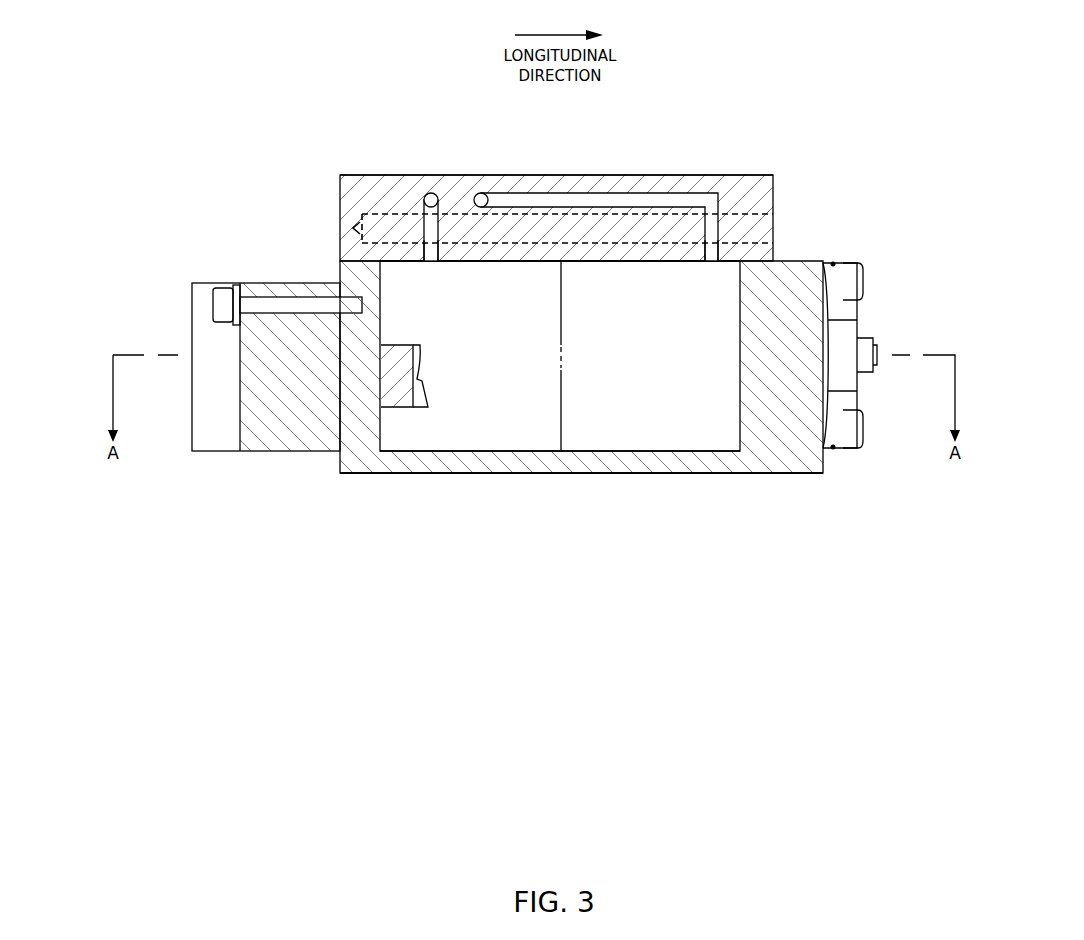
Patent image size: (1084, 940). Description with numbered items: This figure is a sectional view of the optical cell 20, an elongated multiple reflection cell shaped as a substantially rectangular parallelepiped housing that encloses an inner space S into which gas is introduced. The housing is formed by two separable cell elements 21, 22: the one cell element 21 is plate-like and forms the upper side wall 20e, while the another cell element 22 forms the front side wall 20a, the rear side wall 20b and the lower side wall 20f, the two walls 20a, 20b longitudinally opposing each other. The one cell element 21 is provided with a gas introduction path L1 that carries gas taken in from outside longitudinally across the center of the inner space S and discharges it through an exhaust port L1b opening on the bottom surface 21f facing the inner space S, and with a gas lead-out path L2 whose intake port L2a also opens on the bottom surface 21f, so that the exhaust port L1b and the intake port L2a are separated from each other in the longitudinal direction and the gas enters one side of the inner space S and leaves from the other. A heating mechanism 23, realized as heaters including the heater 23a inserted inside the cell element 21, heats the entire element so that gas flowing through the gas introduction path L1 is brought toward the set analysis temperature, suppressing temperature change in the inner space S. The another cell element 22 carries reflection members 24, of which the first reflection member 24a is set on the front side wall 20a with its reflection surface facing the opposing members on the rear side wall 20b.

The optical cell 20 is at (862, 102).
The front side wall 20a is at (340, 462).
The rear side wall 20b is at (812, 454).
The upper side wall 20e is at (362, 178).
The lower side wall 20f is at (637, 462).
The one cell element 21 is at (712, 175).
The bottom surface 21f is at (591, 272).
The another cell element 22 is at (560, 476).
The heating mechanism 23 is at (606, 203).
The heater 23a is at (763, 204).
The reflection members 24 is at (419, 436).
The first reflection member 24a is at (406, 420).
The gas introduction path L1 is at (587, 192).
The exhaust port L1b is at (706, 262).
The gas lead-out path L2 is at (428, 192).
The intake port L2a is at (436, 262).
The inner space S is at (546, 366).